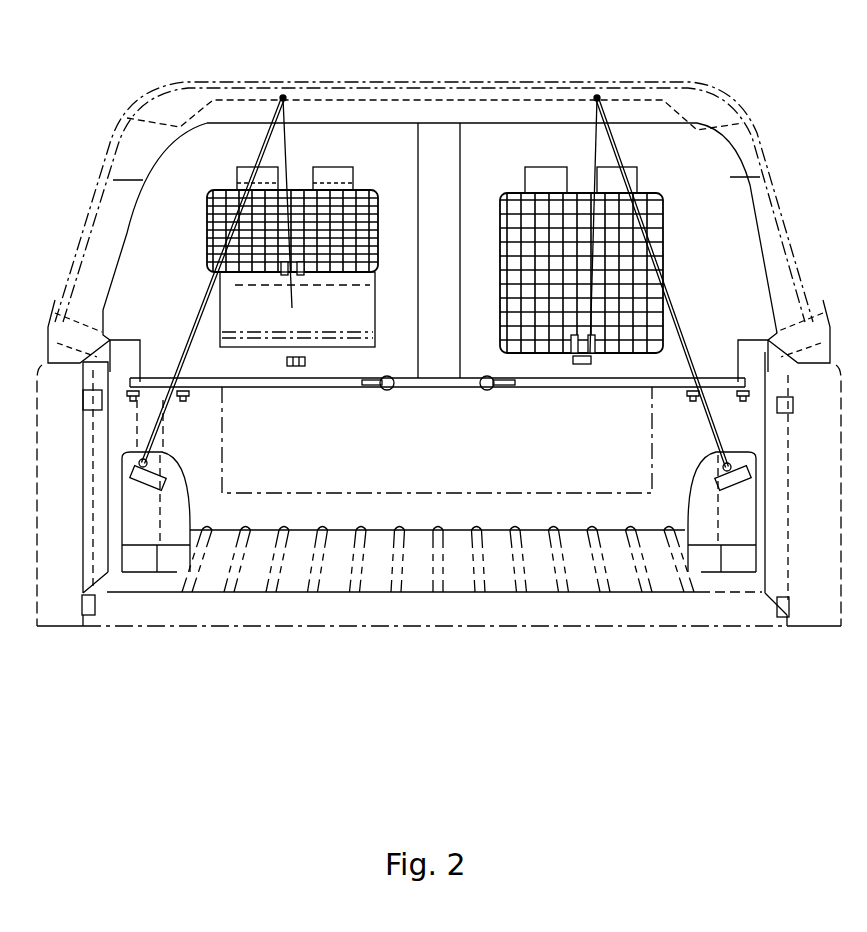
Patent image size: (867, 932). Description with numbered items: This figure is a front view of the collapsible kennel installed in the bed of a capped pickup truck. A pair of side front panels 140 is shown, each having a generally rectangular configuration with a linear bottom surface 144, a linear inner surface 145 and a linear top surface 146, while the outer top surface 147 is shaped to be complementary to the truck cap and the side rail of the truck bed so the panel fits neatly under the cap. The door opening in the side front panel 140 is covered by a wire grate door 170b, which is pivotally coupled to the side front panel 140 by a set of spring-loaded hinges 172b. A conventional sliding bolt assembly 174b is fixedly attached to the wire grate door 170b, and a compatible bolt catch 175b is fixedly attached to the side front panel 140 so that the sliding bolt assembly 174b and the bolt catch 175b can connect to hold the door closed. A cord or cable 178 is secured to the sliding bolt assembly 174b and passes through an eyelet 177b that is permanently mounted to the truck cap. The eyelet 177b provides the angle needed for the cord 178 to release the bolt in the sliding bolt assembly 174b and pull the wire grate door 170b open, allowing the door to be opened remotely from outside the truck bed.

The side front panel 140 is at (203, 119).
The linear bottom surface 144 is at (348, 387).
The linear inner surface 145 is at (418, 317).
The linear top surface 146 is at (400, 123).
The outer top surface 147 is at (128, 228).
The wire grate door 170b is at (361, 188).
The spring-loaded hinges 172b is at (245, 165).
The sliding bolt assembly 174b is at (292, 308).
The bolt catch 175b is at (297, 366).
The eyelet 177b is at (283, 97).
The cord or cable 178 is at (193, 340).